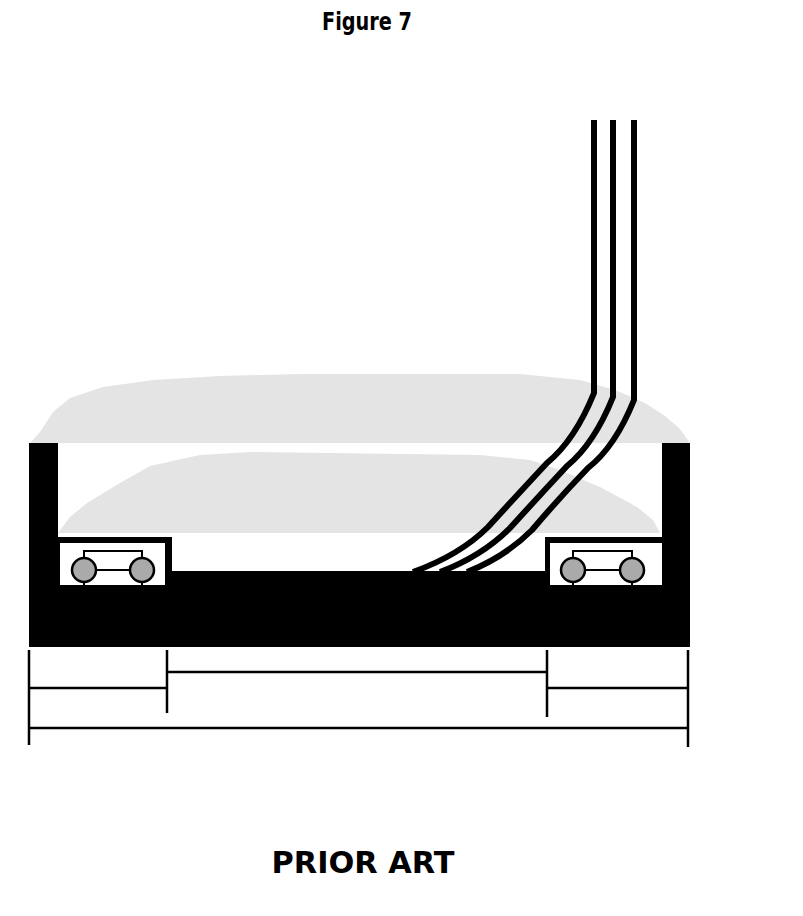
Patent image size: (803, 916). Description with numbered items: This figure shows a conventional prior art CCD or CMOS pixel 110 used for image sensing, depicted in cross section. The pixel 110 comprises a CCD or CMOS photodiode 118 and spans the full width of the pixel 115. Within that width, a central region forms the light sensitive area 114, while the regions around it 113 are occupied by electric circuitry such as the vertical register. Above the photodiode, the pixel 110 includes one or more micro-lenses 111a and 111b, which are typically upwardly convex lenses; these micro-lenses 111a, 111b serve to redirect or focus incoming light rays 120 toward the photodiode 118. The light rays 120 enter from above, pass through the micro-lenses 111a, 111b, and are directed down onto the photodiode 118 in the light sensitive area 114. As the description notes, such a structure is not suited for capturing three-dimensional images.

The pixel 110 is at (395, 545).
The micro-lens 111a is at (360, 408).
The micro-lens 111b is at (359, 492).
The electric circuit regions 113 is at (358, 698).
The light sensitive area 114 is at (357, 666).
The width of the pixel 115 is at (358, 739).
The photodiode 118 is at (304, 572).
The light rays 120 is at (523, 319).